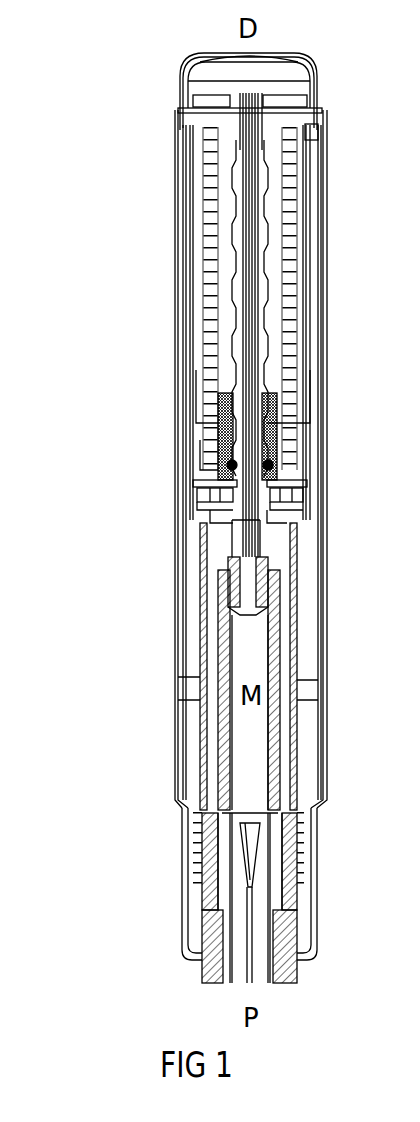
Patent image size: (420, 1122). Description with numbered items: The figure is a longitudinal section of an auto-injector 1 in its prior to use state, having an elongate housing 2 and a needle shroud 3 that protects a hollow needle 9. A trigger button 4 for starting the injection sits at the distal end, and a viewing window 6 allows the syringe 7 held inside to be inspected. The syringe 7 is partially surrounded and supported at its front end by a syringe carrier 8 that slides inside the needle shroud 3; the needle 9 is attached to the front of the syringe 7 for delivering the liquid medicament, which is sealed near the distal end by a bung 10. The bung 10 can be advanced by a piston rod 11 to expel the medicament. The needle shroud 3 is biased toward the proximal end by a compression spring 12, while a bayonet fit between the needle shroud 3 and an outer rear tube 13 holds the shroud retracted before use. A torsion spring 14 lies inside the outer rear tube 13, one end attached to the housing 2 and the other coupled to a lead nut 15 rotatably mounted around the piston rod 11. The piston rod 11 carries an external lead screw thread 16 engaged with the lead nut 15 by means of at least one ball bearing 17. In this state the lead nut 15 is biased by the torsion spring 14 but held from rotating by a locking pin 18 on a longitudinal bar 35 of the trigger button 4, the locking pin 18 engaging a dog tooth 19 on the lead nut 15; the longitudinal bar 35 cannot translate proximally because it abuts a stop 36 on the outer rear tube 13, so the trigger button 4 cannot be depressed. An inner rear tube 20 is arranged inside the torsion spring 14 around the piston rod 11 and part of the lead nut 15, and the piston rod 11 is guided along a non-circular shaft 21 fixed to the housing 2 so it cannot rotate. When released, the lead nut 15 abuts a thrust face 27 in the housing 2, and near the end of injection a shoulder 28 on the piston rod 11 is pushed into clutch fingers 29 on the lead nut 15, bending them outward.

The auto-injector 1 is at (380, 44).
The housing 2 is at (205, 601).
The needle shroud 3 is at (205, 965).
The trigger button 4 is at (188, 73).
The viewing window 6 is at (190, 722).
The syringe 7 is at (228, 670).
The syringe carrier 8 is at (210, 745).
The hollow needle 9 is at (250, 985).
The bung 10 is at (210, 606).
The piston rod 11 is at (300, 521).
The compression spring 12 is at (200, 860).
The outer rear tube 13 is at (183, 321).
The torsion spring 14 is at (205, 260).
The lead nut 15 is at (200, 448).
The lead screw thread 16 is at (262, 292).
The ball bearing 17 is at (285, 460).
The locking pin 18 is at (200, 517).
The dog tooth 19 is at (205, 497).
The inner rear tube 20 is at (192, 218).
The shaft 21 is at (243, 170).
The thrust face 27 is at (318, 487).
The shoulder 28 is at (314, 136).
The clutch fingers 29 is at (268, 414).
The longitudinal bar 35 is at (200, 412).
The stop 36 is at (200, 545).